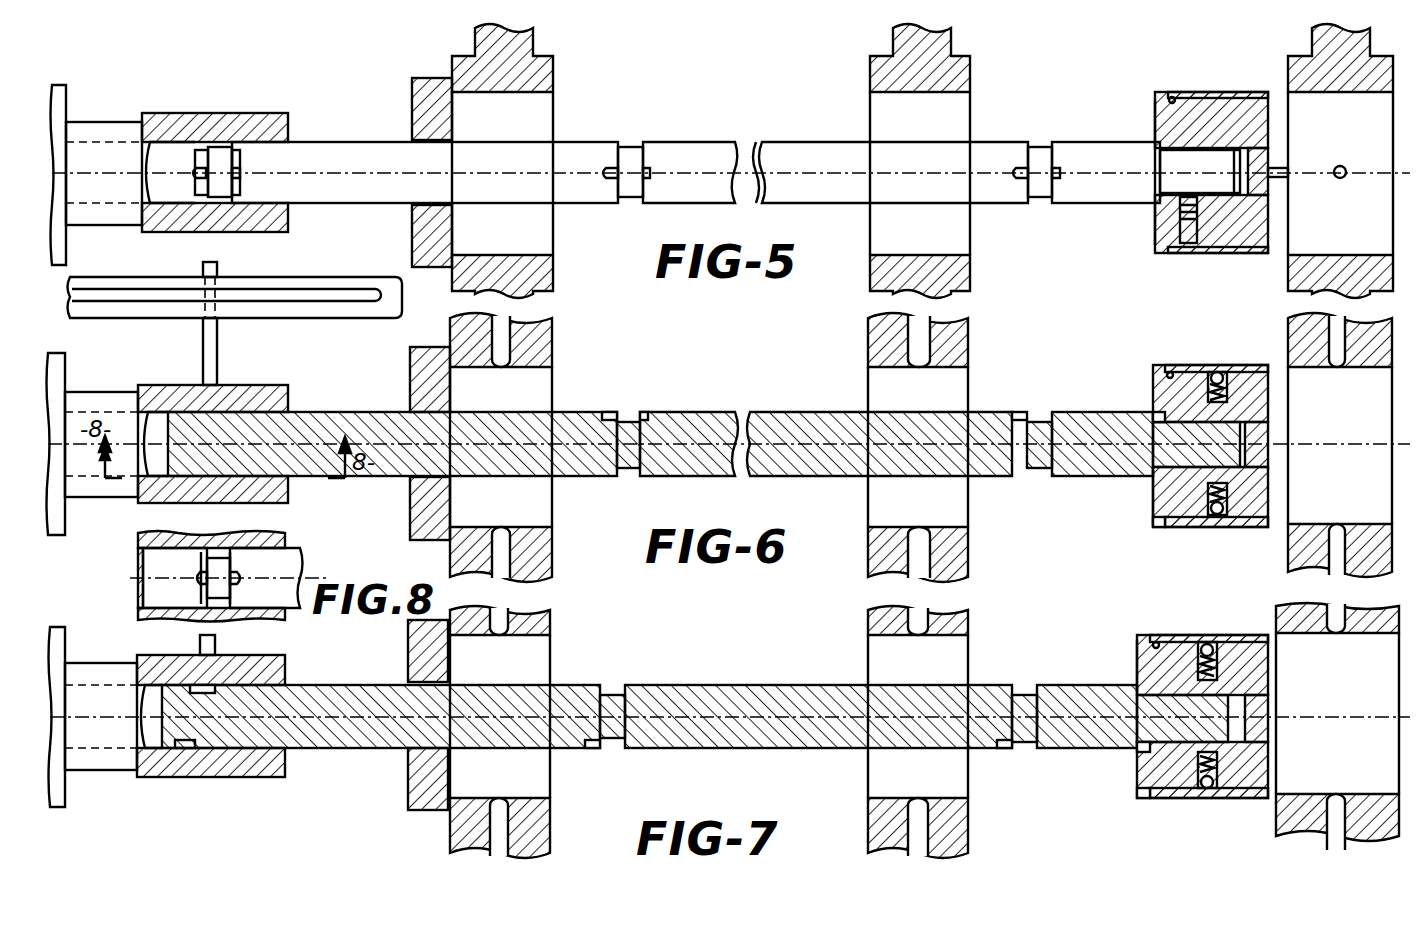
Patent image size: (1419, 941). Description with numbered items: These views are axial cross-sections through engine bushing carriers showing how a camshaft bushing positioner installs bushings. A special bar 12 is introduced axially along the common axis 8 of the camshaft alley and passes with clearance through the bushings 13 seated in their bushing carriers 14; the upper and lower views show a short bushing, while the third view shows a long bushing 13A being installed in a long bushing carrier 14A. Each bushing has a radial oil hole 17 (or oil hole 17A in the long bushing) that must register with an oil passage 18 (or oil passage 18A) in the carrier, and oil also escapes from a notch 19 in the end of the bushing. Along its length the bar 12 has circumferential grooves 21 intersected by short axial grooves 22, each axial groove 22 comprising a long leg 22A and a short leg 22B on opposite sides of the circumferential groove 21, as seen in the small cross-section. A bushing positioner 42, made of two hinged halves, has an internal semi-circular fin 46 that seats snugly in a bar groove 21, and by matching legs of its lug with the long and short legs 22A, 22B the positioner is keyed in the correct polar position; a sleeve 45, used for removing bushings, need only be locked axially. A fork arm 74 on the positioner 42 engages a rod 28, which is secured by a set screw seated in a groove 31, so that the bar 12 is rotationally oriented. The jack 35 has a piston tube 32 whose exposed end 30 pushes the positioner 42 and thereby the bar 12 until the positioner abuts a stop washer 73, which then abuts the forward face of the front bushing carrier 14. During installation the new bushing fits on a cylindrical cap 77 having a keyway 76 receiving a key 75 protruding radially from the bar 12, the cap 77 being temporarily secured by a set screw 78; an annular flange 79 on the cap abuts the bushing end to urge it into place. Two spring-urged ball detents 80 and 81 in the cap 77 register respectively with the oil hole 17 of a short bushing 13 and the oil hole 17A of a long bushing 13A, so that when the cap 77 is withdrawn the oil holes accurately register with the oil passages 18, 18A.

In FIG. 5, the common axis 8 is at (696, 142).
In FIG. 6, the common axis 8 is at (660, 436).
In FIG. 7, the common axis 8 is at (649, 707).
In FIG. 5, the bar 12 is at (775, 140).
In FIG. 6, the bar 12 is at (778, 410).
In FIG. 8, the bar 12 is at (302, 562).
In FIG. 7, the bar 12 is at (778, 684).
In FIG. 5, the bushing 13 is at (1205, 92).
In FIG. 6, the bushing 13 is at (1188, 365).
In FIG. 7, the long bushing 13A is at (1162, 635).
In FIG. 5, the bushing carrier 14 is at (550, 80).
In FIG. 6, the bushing carrier 14 is at (868, 350).
In FIG. 7, the bushing carrier 14 is at (548, 815).
In FIG. 7, the long bushing carrier 14A is at (1280, 612).
In FIG. 6, the radial oil hole 17 is at (1218, 370).
In FIG. 7, the radial oil hole 17A is at (1208, 640).
In FIG. 5, the oil passage 18 is at (1336, 180).
In FIG. 6, the oil passage 18 is at (505, 345).
In FIG. 7, the oil passage 18 is at (500, 636).
In FIG. 7, the oil passage 18A is at (1338, 636).
In FIG. 5, the notch 19 is at (1275, 170).
In FIG. 6, the notch 19 is at (1262, 527).
In FIG. 7, the notch 19 is at (1270, 645).
In FIG. 5, the circumferential groove 21 is at (225, 148).
In FIG. 6, the circumferential groove 21 is at (626, 477).
In FIG. 8, the circumferential groove 21 is at (214, 600).
In FIG. 7, the circumferential groove 21 is at (612, 694).
In FIG. 5, the axial groove 22 is at (200, 150).
In FIG. 6, the axial groove 22 is at (624, 410).
In FIG. 8, the axial groove 22 is at (250, 556).
In FIG. 7, the axial groove 22 is at (228, 684).
In FIG. 5, the long leg 22A is at (200, 200).
In FIG. 6, the long leg 22A is at (607, 410).
In FIG. 8, the long leg 22A is at (245, 578).
In FIG. 5, the short leg 22B is at (238, 195).
In FIG. 6, the short leg 22B is at (646, 410).
In FIG. 8, the short leg 22B is at (208, 584).
In FIG. 5, the rod 28 is at (330, 305).
In FIG. 5, the exposed end 30 is at (140, 195).
In FIG. 6, the exposed end 30 is at (148, 392).
In FIG. 7, the exposed end 30 is at (150, 777).
In FIG. 5, the groove 31 is at (330, 290).
In FIG. 5, the piston tube 32 is at (120, 122).
In FIG. 6, the piston tube 32 is at (122, 392).
In FIG. 7, the piston tube 32 is at (93, 770).
In FIG. 5, the jack 35 is at (75, 84).
In FIG. 6, the jack 35 is at (72, 357).
In FIG. 7, the jack 35 is at (72, 802).
In FIG. 5, the bushing positioner 42 is at (292, 112).
In FIG. 6, the bushing positioner 42 is at (290, 392).
In FIG. 7, the bushing positioner 42 is at (252, 777).
In FIG. 8, the sleeve 45 is at (136, 545).
In FIG. 7, the semi-circular fin 46 is at (200, 770).
In FIG. 5, the stop washer 73 is at (428, 78).
In FIG. 6, the stop washer 73 is at (430, 347).
In FIG. 7, the stop washer 73 is at (410, 655).
In FIG. 5, the fork arm 74 is at (210, 290).
In FIG. 6, the fork arm 74 is at (218, 362).
In FIG. 7, the fork arm 74 is at (217, 648).
In FIG. 5, the key 75 is at (1152, 178).
In FIG. 6, the key 75 is at (1150, 418).
In FIG. 7, the key 75 is at (1135, 737).
In FIG. 6, the keyway 76 is at (1160, 410).
In FIG. 7, the keyway 76 is at (1158, 752).
In FIG. 5, the cap 77 is at (1152, 118).
In FIG. 6, the cap 77 is at (1150, 488).
In FIG. 7, the cap 77 is at (1134, 666).
In FIG. 5, the set screw 78 is at (1180, 215).
In FIG. 5, the annular flange 79 is at (1165, 92).
In FIG. 6, the annular flange 79 is at (1158, 527).
In FIG. 7, the annular flange 79 is at (1150, 798).
In FIG. 6, the ball detent 80 is at (1168, 374).
In FIG. 7, the ball detent 80 is at (1185, 790).
In FIG. 6, the ball detent 81 is at (1225, 505).
In FIG. 7, the ball detent 81 is at (1185, 642).